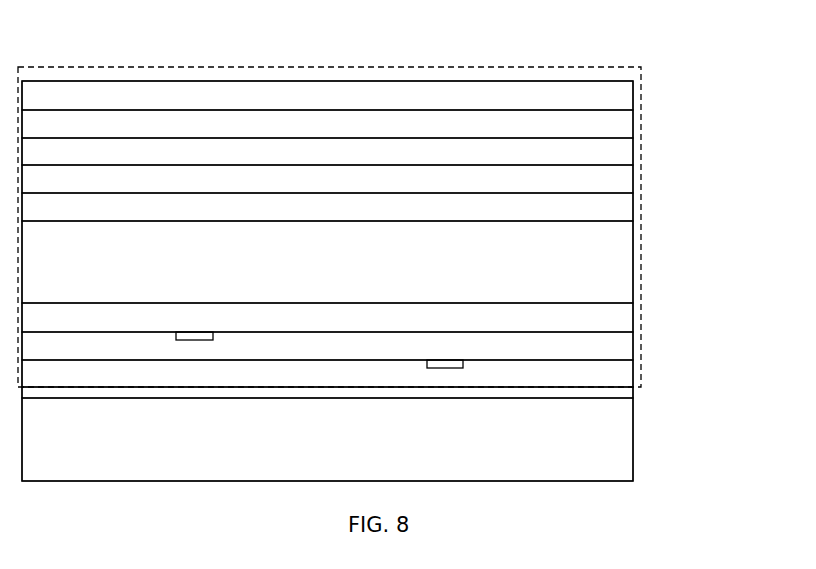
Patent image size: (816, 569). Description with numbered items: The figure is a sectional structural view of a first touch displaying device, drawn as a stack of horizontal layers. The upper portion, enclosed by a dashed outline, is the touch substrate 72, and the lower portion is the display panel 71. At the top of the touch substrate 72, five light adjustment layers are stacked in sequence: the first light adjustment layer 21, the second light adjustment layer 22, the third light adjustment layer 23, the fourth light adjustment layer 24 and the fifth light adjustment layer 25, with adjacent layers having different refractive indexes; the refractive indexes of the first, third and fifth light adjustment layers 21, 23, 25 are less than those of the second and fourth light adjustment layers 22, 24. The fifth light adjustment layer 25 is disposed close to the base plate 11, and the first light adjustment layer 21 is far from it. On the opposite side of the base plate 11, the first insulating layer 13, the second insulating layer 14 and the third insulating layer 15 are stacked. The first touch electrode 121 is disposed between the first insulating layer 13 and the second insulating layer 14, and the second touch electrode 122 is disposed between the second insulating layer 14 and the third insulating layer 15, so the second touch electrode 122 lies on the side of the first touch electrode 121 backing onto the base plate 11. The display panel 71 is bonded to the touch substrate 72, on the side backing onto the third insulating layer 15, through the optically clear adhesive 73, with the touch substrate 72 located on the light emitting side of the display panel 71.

The base plate 11 is at (585, 259).
The first insulating layer 13 is at (577, 318).
The second insulating layer 14 is at (577, 343).
The third insulating layer 15 is at (583, 370).
The first light adjustment layer 21 is at (577, 95).
The second light adjustment layer 22 is at (577, 120).
The third light adjustment layer 23 is at (577, 151).
The fourth light adjustment layer 24 is at (577, 176).
The fifth light adjustment layer 25 is at (583, 204).
The display panel 71 is at (585, 454).
The touch substrate 72 is at (561, 67).
The optically clear adhesive 73 is at (585, 392).
The first touch electrode 121 is at (196, 332).
The second touch electrode 122 is at (444, 360).